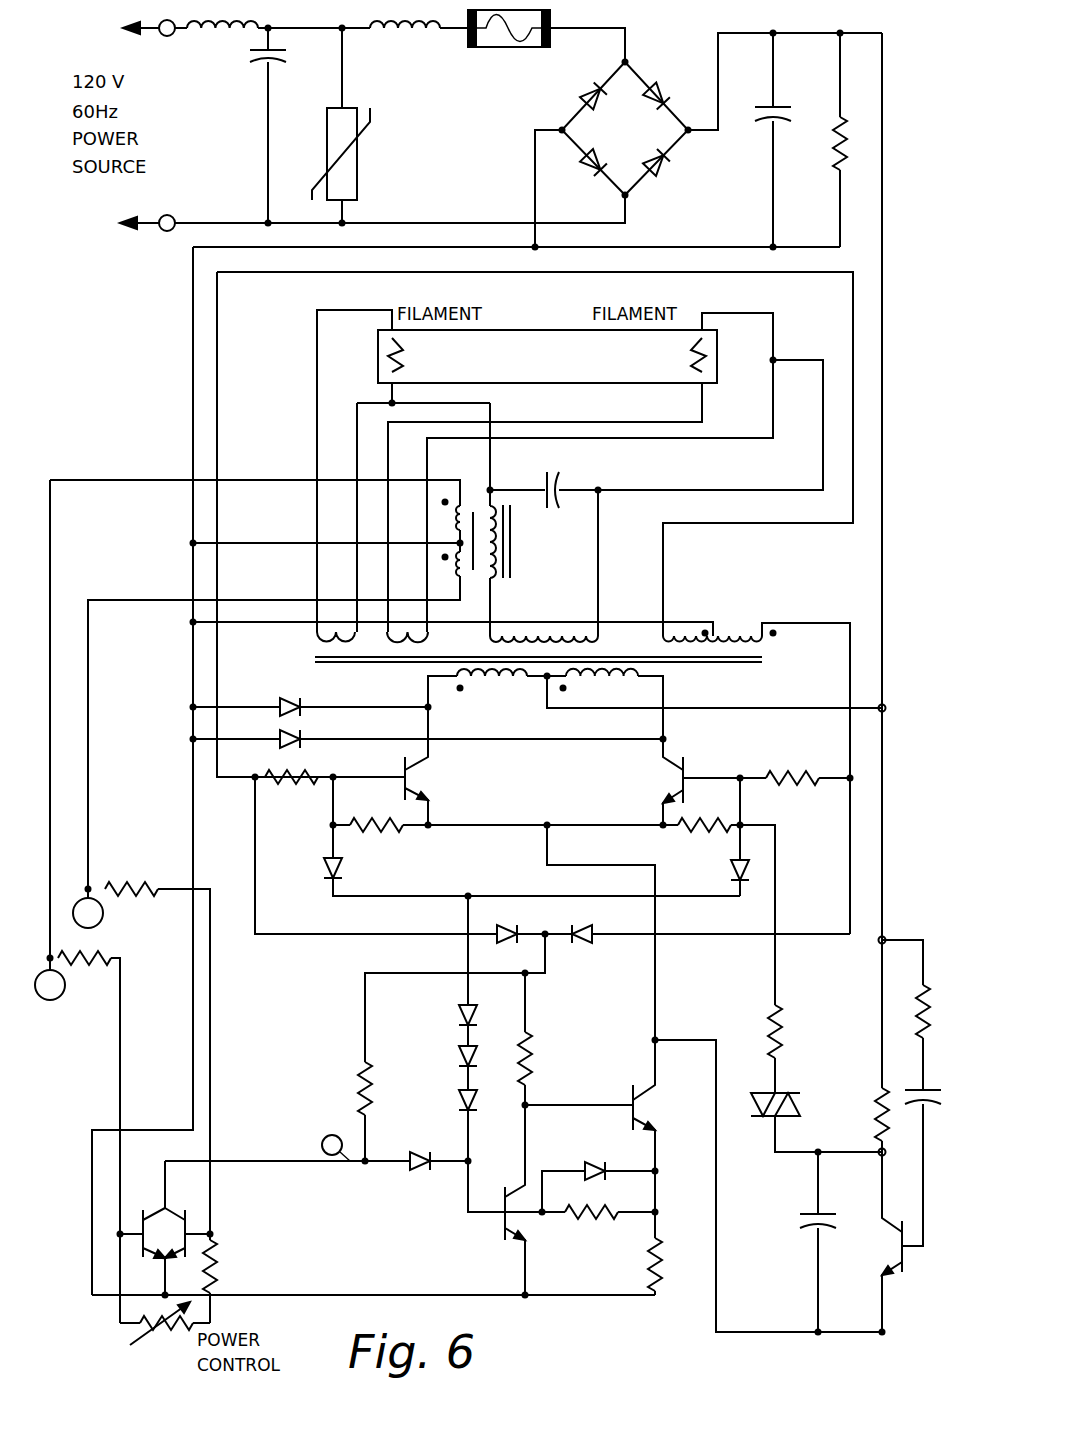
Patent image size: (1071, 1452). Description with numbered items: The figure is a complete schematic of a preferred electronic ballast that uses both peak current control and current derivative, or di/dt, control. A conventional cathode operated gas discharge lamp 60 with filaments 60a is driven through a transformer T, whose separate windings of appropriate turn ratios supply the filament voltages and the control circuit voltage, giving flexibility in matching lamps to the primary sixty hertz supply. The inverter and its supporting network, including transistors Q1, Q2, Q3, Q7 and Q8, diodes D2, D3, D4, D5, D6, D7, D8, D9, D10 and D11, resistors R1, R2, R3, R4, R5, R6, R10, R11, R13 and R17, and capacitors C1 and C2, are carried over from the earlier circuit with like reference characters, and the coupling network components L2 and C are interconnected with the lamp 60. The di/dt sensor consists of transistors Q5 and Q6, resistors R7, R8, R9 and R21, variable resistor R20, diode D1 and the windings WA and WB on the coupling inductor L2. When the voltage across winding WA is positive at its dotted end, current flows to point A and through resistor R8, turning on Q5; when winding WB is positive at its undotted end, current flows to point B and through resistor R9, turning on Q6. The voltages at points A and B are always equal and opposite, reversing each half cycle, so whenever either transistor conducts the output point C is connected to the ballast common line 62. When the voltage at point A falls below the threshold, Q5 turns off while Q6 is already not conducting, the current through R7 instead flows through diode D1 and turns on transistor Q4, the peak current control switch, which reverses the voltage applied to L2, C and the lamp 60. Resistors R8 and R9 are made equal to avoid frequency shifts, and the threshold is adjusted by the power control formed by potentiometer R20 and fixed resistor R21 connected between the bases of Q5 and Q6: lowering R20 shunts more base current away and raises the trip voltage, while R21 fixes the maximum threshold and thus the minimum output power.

The gas discharge lamp 60 is at (540, 330).
The gas discharge lamp filaments 60a is at (712, 366).
The ballast common line 62 is at (352, 1295).
The point A is at (50, 740).
The point B is at (88, 764).
The coupling network capacitor C is at (544, 487).
The coupling inductor L2 is at (514, 542).
The transformer T is at (546, 661).
The winding WA is at (460, 503).
The winding WB is at (462, 580).
The transistor Q1 is at (421, 766).
The transistor Q2 is at (666, 791).
The transistor Q3 is at (651, 1128).
The transistor Q4 is at (498, 1241).
The transistor Q5 is at (147, 1219).
The transistor Q6 is at (183, 1219).
The triac Q7 is at (812, 1122).
The transistor Q8 is at (878, 1276).
The diode D1 is at (316, 1176).
The diode D2 is at (428, 748).
The diode D3 is at (310, 695).
The diode D4 is at (517, 860).
The diode D5 is at (724, 860).
The diode D6 is at (452, 971).
The diode D7 is at (452, 1068).
The diode D8 is at (598, 1176).
The diode D9 is at (466, 1151).
The diode D10 is at (502, 923).
The diode D11 is at (581, 923).
The resistor R1 is at (335, 788).
The resistor R2 is at (766, 788).
The resistor R3 is at (380, 804).
The resistor R4 is at (726, 901).
The resistor R5 is at (538, 1058).
The resistor R6 is at (580, 1226).
The resistor R7 is at (350, 1088).
The resistor R8 is at (89, 1137).
The resistor R9 is at (157, 1051).
The resistor R10 is at (793, 1049).
The resistor R11 is at (866, 1114).
The resistor R13 is at (916, 1000).
The resistor R17 is at (672, 1233).
The variable resistor (potentiometer) R20 is at (165, 1332).
The fixed resistor R21 is at (227, 1281).
The capacitor C1 is at (812, 1242).
The capacitor C2 is at (916, 1103).